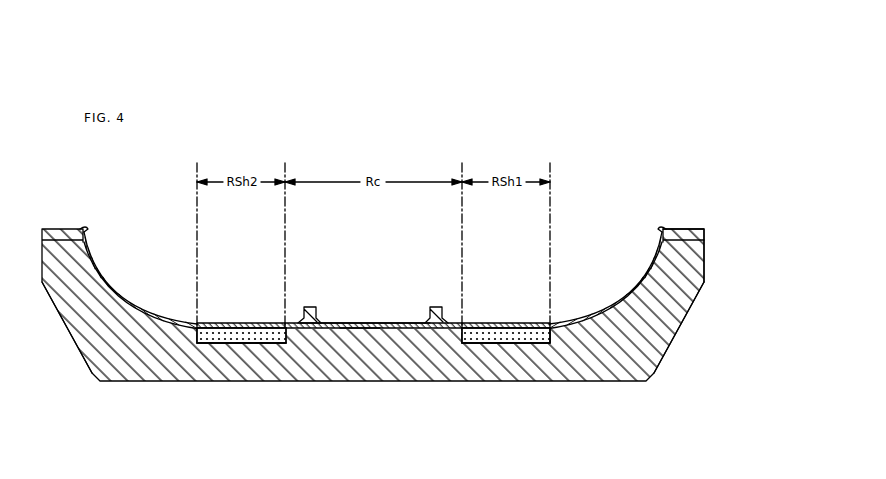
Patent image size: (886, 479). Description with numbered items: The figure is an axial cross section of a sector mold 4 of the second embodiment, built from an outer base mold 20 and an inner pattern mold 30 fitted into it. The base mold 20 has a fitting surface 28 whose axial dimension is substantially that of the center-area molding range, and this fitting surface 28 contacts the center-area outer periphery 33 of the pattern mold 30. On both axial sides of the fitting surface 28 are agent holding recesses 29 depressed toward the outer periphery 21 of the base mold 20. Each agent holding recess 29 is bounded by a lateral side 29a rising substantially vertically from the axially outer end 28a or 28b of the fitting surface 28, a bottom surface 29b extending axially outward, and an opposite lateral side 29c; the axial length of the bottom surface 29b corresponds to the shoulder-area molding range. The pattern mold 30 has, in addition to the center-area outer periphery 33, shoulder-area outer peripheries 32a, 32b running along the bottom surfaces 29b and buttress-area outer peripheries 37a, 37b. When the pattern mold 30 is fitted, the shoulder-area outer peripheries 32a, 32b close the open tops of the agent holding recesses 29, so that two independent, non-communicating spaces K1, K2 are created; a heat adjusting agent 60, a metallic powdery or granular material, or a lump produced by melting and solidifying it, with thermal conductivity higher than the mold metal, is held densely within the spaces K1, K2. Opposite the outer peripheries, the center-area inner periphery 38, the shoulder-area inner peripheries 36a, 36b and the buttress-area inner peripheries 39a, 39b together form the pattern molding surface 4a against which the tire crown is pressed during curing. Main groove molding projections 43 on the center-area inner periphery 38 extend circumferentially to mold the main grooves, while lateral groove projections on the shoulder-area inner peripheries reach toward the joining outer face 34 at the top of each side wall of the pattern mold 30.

The sector mold 4 is at (778, 185).
The pattern molding surface 4a is at (340, 238).
The base mold 20 is at (714, 271).
The outer periphery 21 is at (386, 382).
The fitting surface 28 is at (344, 323).
The axially outer end of fitting surface 28a is at (460, 323).
The axially outer end of fitting surface 28b is at (287, 323).
The agent holding recess 29 is at (189, 349).
The lateral side 29a is at (278, 344).
The bottom surface 29b is at (231, 327).
The lateral side 29c is at (202, 324).
The pattern mold 30 is at (714, 210).
The shoulder-area outer periphery 32a is at (493, 345).
The shoulder-area outer periphery 32b is at (263, 345).
The center-area outer periphery 33 is at (356, 330).
The joining outer face 34 is at (68, 232).
The shoulder-area inner periphery 36a is at (484, 323).
The shoulder-area inner periphery 36b is at (260, 323).
The buttress-area outer periphery 37a is at (668, 352).
The buttress-area outer periphery 37b is at (76, 322).
The center-area inner periphery 38 is at (364, 323).
The buttress-area inner periphery 39a is at (608, 306).
The buttress-area inner periphery 39b is at (134, 301).
The main groove molding projection 43 is at (313, 307).
The heat adjusting agent 60 is at (192, 352).
The space K1 is at (507, 345).
The space K2 is at (243, 345).